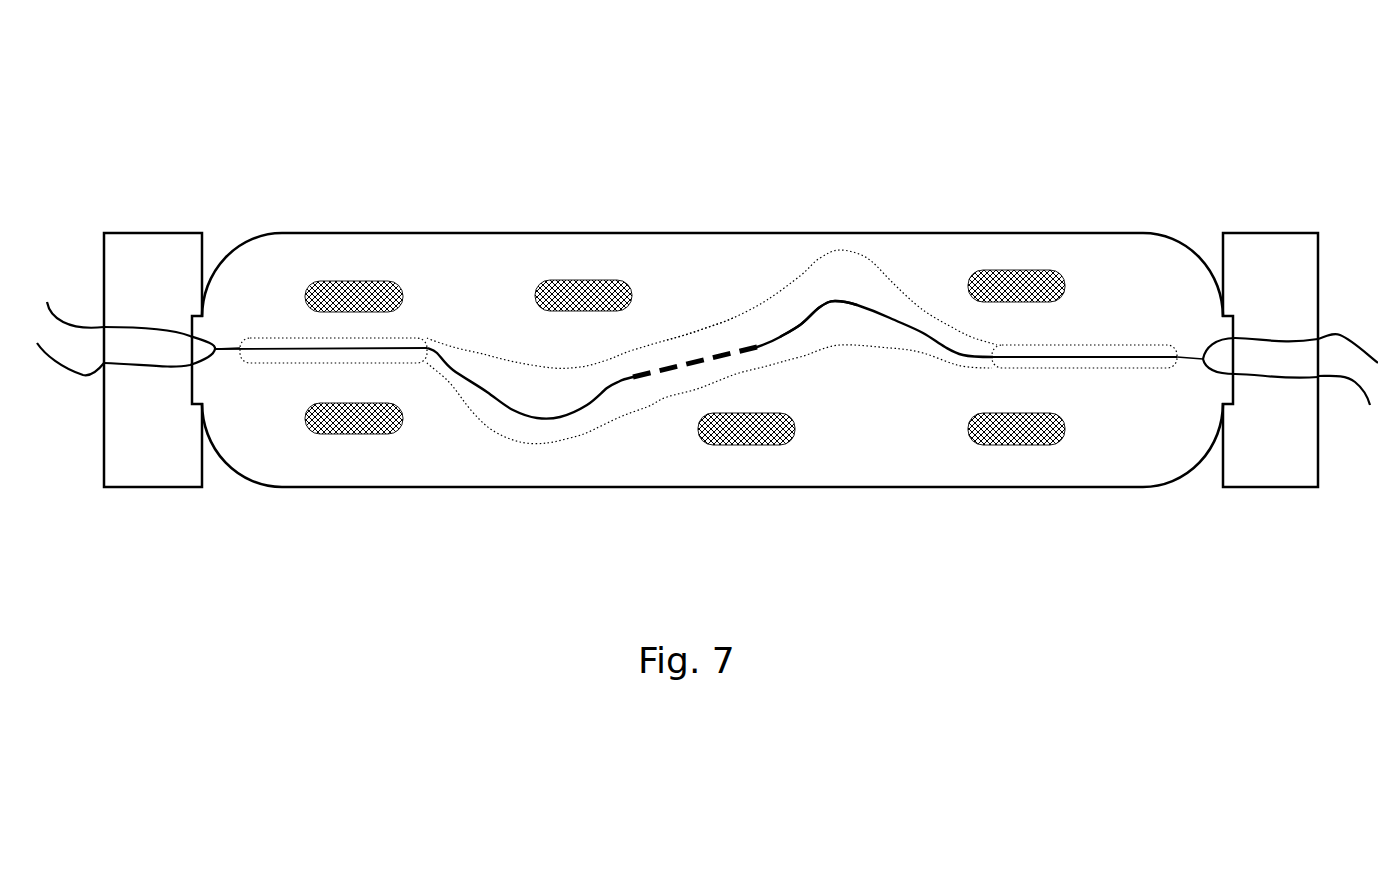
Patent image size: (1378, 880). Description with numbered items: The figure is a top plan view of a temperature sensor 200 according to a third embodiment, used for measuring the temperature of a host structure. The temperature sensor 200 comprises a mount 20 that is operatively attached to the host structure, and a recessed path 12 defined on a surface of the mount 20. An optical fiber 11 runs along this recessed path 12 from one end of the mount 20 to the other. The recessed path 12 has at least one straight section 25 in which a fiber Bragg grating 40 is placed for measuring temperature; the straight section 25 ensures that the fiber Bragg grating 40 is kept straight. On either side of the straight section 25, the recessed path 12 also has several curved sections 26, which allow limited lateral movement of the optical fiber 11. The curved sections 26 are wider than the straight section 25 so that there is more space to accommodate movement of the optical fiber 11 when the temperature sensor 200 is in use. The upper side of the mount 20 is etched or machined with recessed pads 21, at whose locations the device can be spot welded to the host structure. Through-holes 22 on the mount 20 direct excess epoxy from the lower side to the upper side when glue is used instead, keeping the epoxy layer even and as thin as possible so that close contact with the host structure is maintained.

The temperature sensor 200 is at (906, 128).
The mount 20 is at (483, 233).
The recessed pads 21 is at (352, 281).
The through-holes 22 is at (1120, 368).
The straight section 25 is at (697, 334).
The curved sections 26 is at (900, 295).
The optical fiber 11 is at (877, 314).
The recessed path 12 is at (797, 302).
The fiber Bragg grating 40 is at (625, 386).